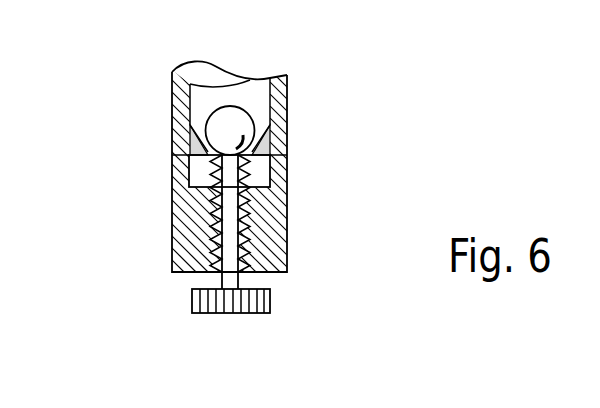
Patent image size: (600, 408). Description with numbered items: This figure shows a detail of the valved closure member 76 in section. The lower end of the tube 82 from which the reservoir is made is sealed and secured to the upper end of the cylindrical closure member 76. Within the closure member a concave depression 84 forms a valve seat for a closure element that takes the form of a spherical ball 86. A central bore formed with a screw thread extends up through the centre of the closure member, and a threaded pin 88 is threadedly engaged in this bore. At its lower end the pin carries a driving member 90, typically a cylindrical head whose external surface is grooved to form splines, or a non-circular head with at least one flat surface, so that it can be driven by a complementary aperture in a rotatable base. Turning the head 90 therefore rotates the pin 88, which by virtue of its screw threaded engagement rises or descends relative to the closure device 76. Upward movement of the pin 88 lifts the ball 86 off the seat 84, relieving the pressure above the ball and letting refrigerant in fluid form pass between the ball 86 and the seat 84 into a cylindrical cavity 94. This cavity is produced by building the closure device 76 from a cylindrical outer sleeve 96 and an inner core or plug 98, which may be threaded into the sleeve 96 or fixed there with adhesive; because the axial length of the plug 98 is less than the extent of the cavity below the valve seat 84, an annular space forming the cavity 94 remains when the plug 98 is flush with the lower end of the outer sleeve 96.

The valved closure member 76 is at (300, 216).
The lower end of the tube 82 is at (173, 97).
The concave depression 84 is at (289, 130).
The spherical ball 86 is at (220, 132).
The threaded pin 88 is at (203, 281).
The driving member 90 is at (237, 326).
The cylindrical cavity 94 is at (265, 183).
The cylindrical outer sleeve 96 is at (289, 240).
The inner core or plug 98 is at (260, 273).